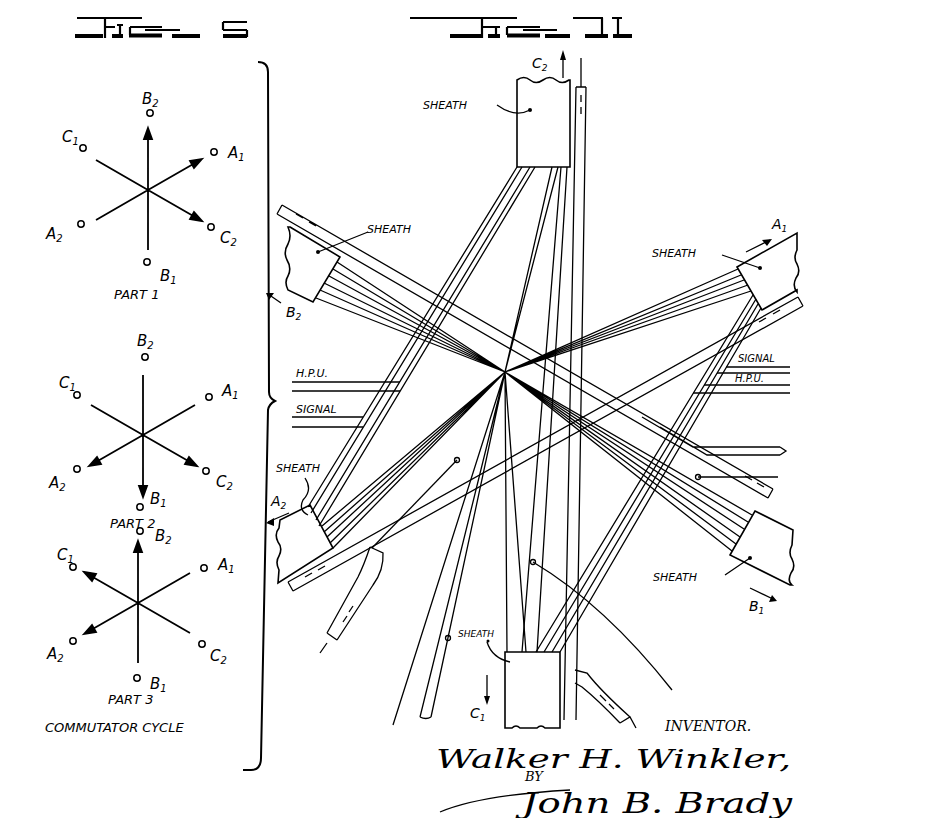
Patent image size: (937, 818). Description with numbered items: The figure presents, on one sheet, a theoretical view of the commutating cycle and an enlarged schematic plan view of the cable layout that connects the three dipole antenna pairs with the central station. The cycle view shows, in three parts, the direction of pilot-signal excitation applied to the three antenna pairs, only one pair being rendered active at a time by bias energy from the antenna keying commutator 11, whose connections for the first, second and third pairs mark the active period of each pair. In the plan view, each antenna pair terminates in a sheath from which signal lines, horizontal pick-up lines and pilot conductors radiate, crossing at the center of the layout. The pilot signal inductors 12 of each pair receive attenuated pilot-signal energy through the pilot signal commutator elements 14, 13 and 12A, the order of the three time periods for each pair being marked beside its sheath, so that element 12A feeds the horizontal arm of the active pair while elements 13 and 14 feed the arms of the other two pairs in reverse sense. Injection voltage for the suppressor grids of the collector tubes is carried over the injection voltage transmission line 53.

The pilot-signal inductors 12 is at (598, 108).
The antenna keying commutator 11 is at (390, 718).
The pilot-signal commutator element 12A is at (517, 570).
The pilot-signal commutator element 13 is at (513, 570).
The pilot-signal commutator element 14 is at (700, 442).
The injection voltage transmission line 53 is at (482, 772).